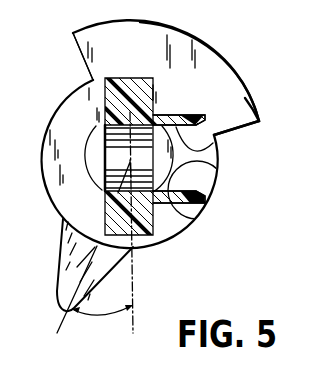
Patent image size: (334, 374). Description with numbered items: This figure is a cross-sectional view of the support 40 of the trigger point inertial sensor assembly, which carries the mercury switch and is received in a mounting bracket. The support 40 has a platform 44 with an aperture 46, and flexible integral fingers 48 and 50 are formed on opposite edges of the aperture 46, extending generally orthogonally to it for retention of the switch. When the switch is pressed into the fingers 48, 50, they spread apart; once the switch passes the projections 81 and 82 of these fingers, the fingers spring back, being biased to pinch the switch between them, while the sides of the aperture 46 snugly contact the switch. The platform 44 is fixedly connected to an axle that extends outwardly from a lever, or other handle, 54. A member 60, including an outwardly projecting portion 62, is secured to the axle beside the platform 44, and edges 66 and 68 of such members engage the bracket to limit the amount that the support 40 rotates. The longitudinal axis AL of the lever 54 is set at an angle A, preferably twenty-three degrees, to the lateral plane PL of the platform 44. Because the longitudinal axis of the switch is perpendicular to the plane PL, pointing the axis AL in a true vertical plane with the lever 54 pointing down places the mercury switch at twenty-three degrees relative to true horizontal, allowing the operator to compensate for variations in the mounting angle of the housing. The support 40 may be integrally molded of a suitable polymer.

The support 40 is at (174, 20).
The platform 44 is at (127, 78).
The aperture 46 is at (108, 152).
The flexible integral finger 48 is at (178, 114).
The flexible integral finger 50 is at (188, 206).
The lever 54 is at (64, 258).
The member 60 is at (243, 43).
The outwardly projecting portion 62 is at (243, 104).
The edge 66 is at (259, 122).
The edge 68 is at (73, 33).
The projection 81 is at (212, 144).
The projection 82 is at (213, 168).
The longitudinal axis of lever AL is at (68, 302).
The lateral plane of platform PL is at (136, 235).
The angle A is at (112, 316).